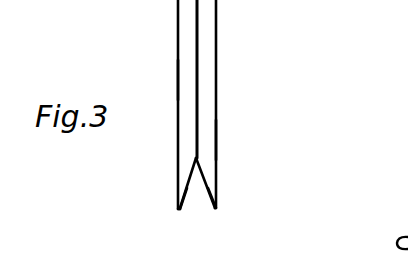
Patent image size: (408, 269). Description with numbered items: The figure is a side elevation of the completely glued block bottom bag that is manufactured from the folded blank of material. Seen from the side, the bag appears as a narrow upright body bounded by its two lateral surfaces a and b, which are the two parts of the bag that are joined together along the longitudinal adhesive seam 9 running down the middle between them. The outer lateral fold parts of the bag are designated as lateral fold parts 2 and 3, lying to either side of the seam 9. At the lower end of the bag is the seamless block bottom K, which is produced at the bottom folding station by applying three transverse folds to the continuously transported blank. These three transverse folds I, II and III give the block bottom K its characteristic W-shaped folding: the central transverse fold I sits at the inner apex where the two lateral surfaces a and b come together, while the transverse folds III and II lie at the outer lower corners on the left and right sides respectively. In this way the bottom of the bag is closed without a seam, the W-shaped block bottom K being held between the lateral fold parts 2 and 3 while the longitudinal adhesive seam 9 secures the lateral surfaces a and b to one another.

The lateral fold part 2 is at (177, 29).
The lateral fold part 3 is at (203, 38).
The longitudinal adhesive seam 9 is at (197, 92).
The lateral surface a is at (177, 81).
The lateral surface b is at (217, 140).
The block bottom K is at (183, 189).
The transverse fold I is at (196, 158).
The transverse fold II is at (216, 208).
The transverse fold III is at (178, 209).